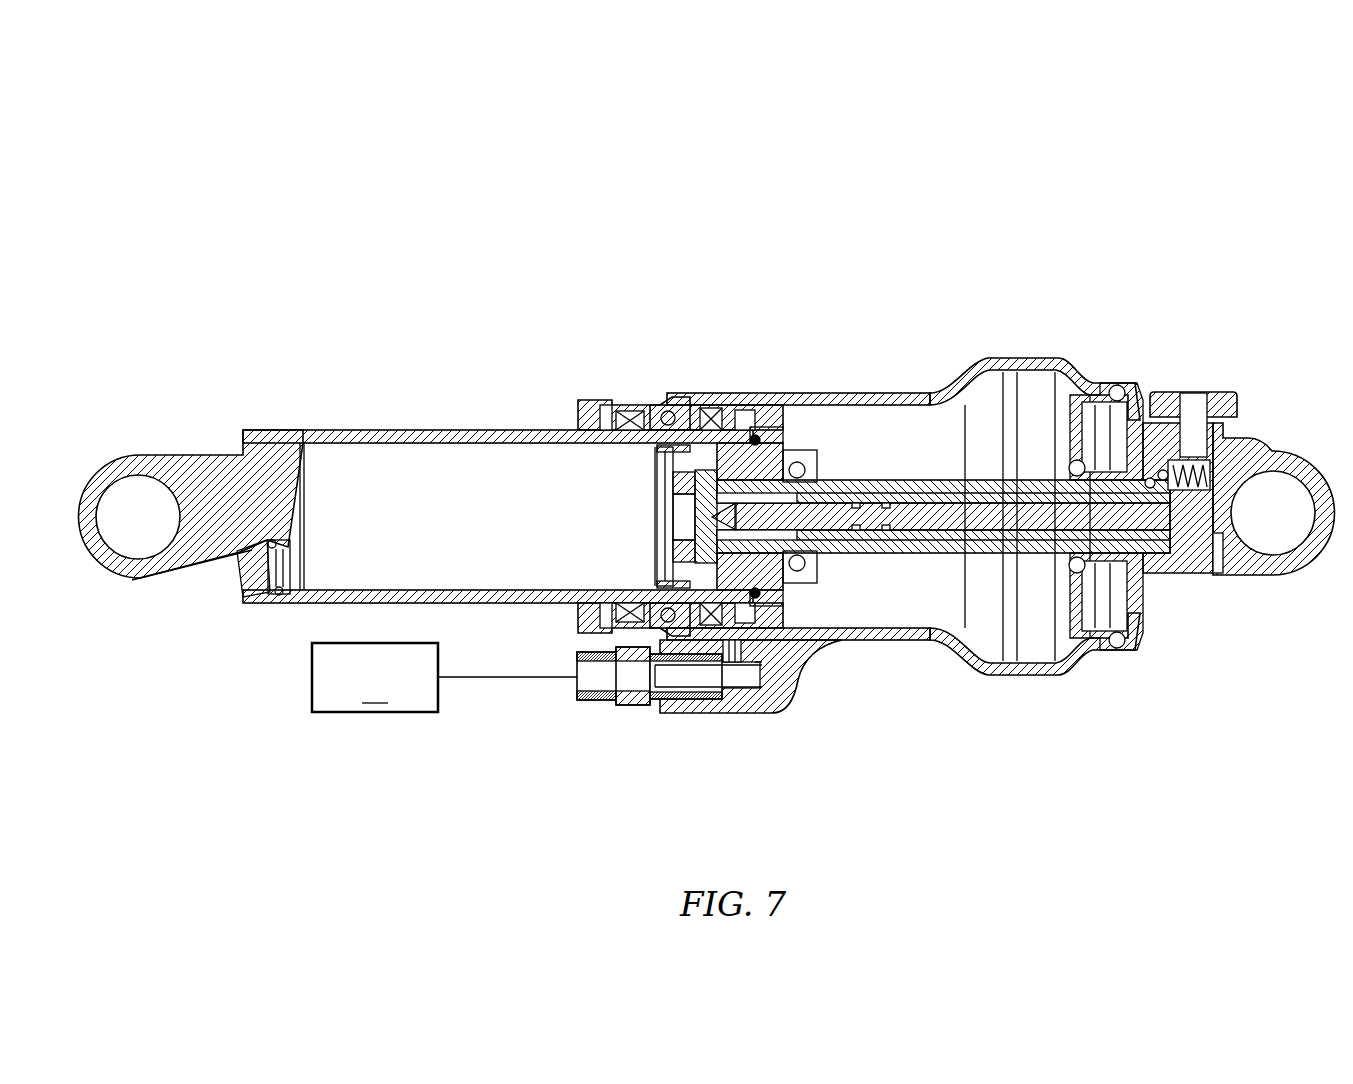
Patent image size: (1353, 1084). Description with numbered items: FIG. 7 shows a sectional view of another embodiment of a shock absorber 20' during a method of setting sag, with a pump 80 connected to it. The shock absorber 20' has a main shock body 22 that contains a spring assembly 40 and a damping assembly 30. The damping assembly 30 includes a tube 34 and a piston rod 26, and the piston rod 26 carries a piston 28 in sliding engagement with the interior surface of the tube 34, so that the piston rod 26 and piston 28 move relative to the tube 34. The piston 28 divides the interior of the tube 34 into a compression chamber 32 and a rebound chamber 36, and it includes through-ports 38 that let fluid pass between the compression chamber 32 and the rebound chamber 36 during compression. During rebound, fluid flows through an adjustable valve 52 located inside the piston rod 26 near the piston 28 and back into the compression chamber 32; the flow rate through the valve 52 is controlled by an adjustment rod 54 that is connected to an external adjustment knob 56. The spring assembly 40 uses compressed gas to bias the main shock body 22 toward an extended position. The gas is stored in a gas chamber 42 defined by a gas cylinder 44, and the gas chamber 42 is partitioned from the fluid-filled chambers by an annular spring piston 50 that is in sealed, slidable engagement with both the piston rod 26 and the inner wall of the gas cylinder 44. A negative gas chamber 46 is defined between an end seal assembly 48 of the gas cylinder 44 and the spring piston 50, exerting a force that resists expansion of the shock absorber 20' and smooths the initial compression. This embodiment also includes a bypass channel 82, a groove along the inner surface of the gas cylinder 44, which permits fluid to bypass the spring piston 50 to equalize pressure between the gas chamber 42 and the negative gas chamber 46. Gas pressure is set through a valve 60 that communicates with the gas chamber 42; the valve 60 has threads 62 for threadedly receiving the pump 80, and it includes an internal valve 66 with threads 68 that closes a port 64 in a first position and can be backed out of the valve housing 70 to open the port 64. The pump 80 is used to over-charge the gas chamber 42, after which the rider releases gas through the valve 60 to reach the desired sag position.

The shock absorber 20' is at (707, 459).
The main shock body 22 is at (707, 465).
The piston rod 26 is at (937, 545).
The piston 28 is at (652, 456).
The damping assembly 30 is at (604, 700).
The compression chamber 32 is at (443, 470).
The tube 34 is at (348, 428).
The rebound chamber 36 is at (706, 420).
The through-ports 38 is at (643, 516).
The spring assembly 40 is at (778, 691).
The gas chamber 42 is at (845, 418).
The gas cylinder 44 is at (1023, 356).
The negative gas chamber 46 is at (659, 472).
The end seal assembly 48 is at (602, 479).
The spring piston 50 is at (782, 428).
The adjustable valve 52 is at (762, 576).
The adjustment rod 54 is at (930, 512).
The adjustment knob 56 is at (1214, 391).
The valve 60 is at (643, 718).
The threads 62 is at (625, 708).
The port 64 is at (765, 648).
The internal valve 66 is at (716, 700).
The threads 68 is at (672, 712).
The valve housing 70 is at (762, 712).
The pump 80 is at (444, 677).
The bypass channel 82 is at (742, 645).